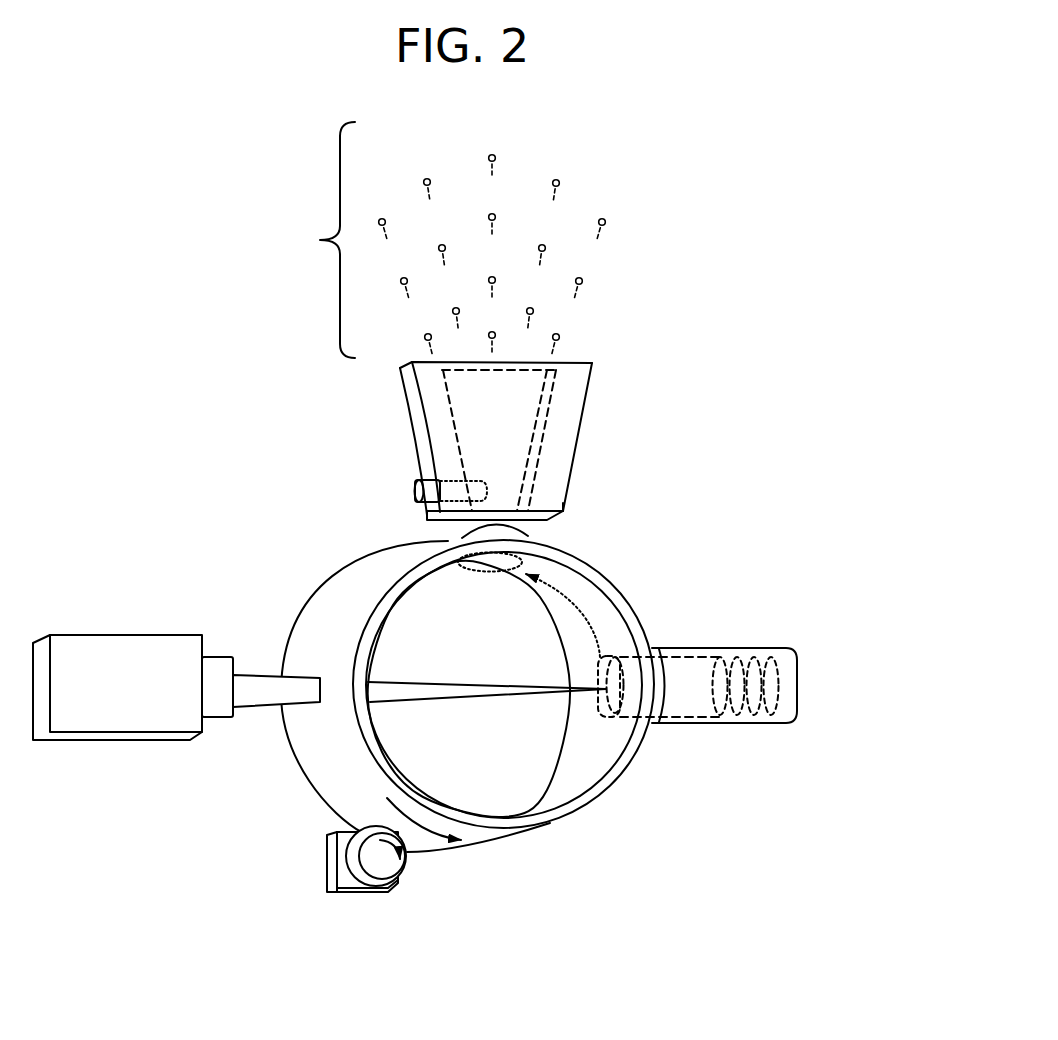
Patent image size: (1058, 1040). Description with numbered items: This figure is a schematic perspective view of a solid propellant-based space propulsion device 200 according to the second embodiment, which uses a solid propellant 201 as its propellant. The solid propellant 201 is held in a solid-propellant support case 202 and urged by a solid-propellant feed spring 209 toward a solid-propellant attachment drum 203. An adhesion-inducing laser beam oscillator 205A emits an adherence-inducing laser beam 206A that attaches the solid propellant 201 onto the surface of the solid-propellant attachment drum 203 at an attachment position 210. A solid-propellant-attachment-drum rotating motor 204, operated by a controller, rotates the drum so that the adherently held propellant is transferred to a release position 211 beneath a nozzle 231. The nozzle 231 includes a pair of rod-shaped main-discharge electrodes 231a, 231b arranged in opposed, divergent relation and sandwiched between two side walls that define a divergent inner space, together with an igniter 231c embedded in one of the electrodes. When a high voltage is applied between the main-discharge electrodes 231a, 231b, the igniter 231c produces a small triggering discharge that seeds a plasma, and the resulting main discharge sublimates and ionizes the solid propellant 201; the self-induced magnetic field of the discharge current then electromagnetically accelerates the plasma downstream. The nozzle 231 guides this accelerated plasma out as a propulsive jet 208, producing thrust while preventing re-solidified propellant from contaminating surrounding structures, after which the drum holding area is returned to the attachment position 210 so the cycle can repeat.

The solid propellant-based space propulsion device 200 is at (806, 247).
The solid propellant 201 is at (710, 652).
The solid-propellant support case 202 is at (768, 648).
The solid-propellant attachment drum 203 is at (370, 567).
The solid-propellant-attachment-drum rotating motor 204 is at (364, 883).
The adhesion-inducing laser beam oscillator 205A is at (146, 634).
The adherence-inducing laser beam 206A is at (272, 677).
The propulsive jet 208 is at (320, 239).
The solid-propellant feed spring 209 is at (780, 684).
The attachment position 210 is at (621, 677).
The release position 211 is at (529, 562).
The nozzle 231 is at (578, 415).
The main-discharge electrode 231a is at (427, 507).
The main-discharge electrode 231b is at (560, 508).
The igniter 231c is at (416, 480).